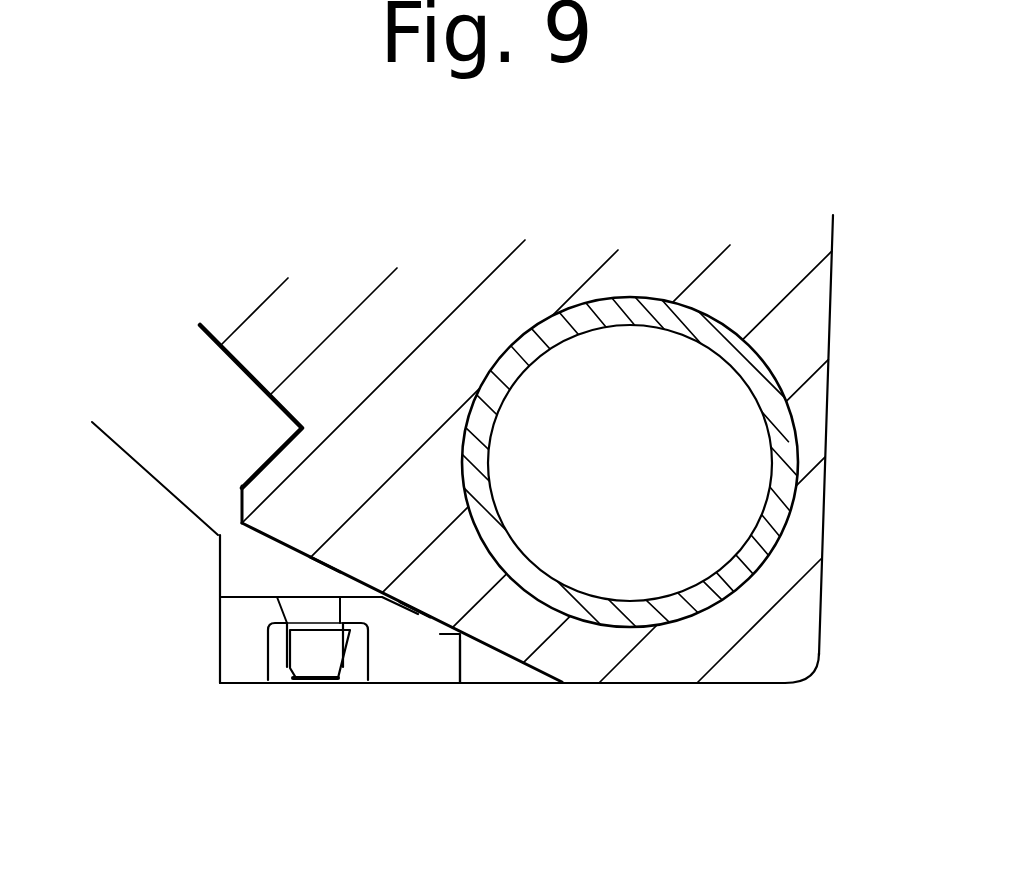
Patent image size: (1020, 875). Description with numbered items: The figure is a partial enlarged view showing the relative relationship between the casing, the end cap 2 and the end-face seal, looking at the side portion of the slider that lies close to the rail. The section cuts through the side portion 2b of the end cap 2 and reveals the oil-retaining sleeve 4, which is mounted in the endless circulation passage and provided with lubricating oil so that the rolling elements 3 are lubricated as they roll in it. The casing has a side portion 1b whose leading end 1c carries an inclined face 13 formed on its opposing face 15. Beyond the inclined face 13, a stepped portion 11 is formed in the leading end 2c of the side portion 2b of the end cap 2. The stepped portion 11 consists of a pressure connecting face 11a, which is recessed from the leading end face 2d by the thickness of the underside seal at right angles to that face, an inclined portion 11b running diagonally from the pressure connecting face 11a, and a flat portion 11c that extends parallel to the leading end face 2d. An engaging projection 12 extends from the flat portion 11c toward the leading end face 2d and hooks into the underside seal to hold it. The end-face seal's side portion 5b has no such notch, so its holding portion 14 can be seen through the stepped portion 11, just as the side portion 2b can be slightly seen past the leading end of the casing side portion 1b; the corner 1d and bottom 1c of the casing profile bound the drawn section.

The end cap 2 is at (789, 178).
The rolling element 3 is at (227, 375).
The oil-retaining sleeve 4 is at (797, 445).
The side portion of the casing 1b is at (813, 330).
The leading end of the casing side portion 1c is at (747, 662).
The bottom surface 1d is at (692, 685).
The side portion of the end cap 2b is at (492, 672).
The leading end of the end cap side portion 2c is at (535, 675).
The leading end face of the end cap side portion 2d is at (532, 672).
The side portion of the end-face seal 5b is at (240, 650).
The stepped portion 11 is at (423, 632).
The pressure connecting face 11a is at (465, 662).
The inclined portion 11b is at (406, 610).
The flat portion 11c is at (250, 583).
The engaging projection 12 is at (304, 655).
The inclined face 13 is at (318, 562).
The holding portion 14 is at (355, 680).
The opposing face of the casing side portion 15 is at (220, 531).